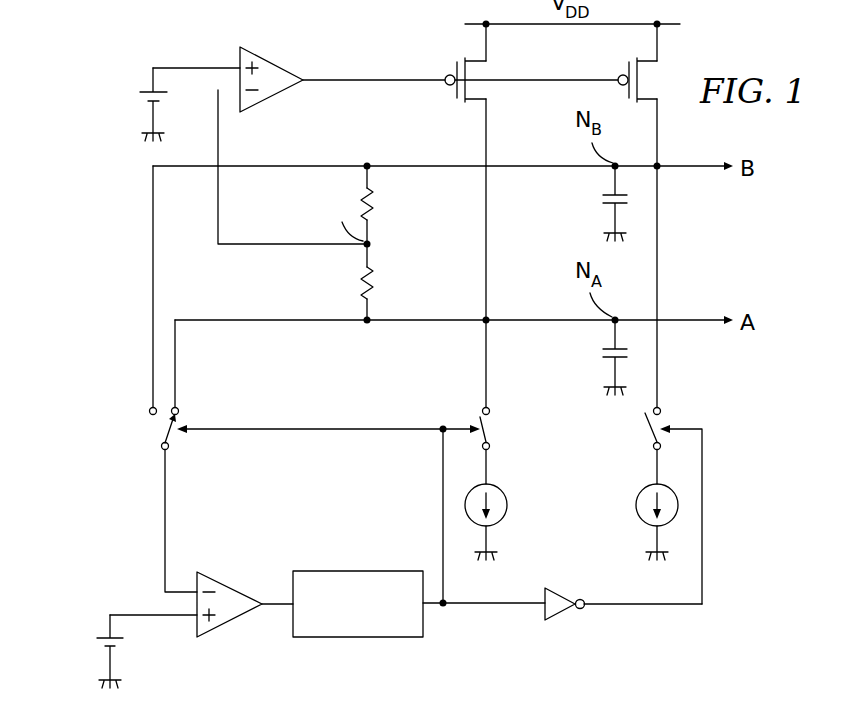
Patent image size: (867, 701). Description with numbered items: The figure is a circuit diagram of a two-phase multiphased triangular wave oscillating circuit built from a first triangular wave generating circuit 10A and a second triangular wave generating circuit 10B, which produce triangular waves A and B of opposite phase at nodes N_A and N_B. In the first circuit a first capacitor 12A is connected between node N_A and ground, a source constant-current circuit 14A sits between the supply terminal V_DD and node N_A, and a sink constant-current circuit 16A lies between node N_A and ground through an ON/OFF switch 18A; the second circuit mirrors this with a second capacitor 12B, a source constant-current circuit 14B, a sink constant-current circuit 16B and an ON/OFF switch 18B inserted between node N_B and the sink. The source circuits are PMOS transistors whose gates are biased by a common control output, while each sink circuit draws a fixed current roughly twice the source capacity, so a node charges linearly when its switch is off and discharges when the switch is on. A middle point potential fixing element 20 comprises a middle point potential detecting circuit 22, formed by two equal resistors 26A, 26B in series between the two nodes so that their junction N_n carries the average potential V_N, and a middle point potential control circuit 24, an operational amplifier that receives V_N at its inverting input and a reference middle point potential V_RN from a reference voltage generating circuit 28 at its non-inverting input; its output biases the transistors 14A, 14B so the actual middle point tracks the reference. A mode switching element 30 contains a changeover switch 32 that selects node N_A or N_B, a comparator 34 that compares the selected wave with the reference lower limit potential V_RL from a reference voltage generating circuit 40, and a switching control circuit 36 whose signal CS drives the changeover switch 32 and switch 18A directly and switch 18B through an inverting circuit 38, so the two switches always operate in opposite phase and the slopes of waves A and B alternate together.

The first triangular wave generating circuit 10A is at (550, 269).
The second triangular wave generating circuit 10B is at (717, 260).
The first capacitor 12A is at (602, 355).
The second capacitor 12B is at (602, 201).
The source constant-current circuit 14A is at (455, 68).
The source constant-current circuit 14B is at (627, 68).
The sink constant-current circuit 16A is at (506, 499).
The sink constant-current circuit 16B is at (637, 513).
The ON/OFF switch 18A is at (490, 431).
The ON/OFF switch 18B is at (645, 428).
The middle point potential fixing element 20 is at (382, 138).
The middle point potential detecting circuit 22 is at (348, 260).
The middle point potential control circuit 24 is at (277, 57).
The resistor 26A is at (372, 282).
The resistor 26B is at (372, 206).
The reference voltage generating circuit 28 is at (135, 97).
The mode switching element 30 is at (318, 508).
The changeover switch 32 is at (158, 437).
The comparator 34 is at (232, 627).
The switching control circuit 36 is at (356, 638).
The inverting circuit 38 is at (565, 617).
The reference voltage generating circuit 40 is at (95, 646).